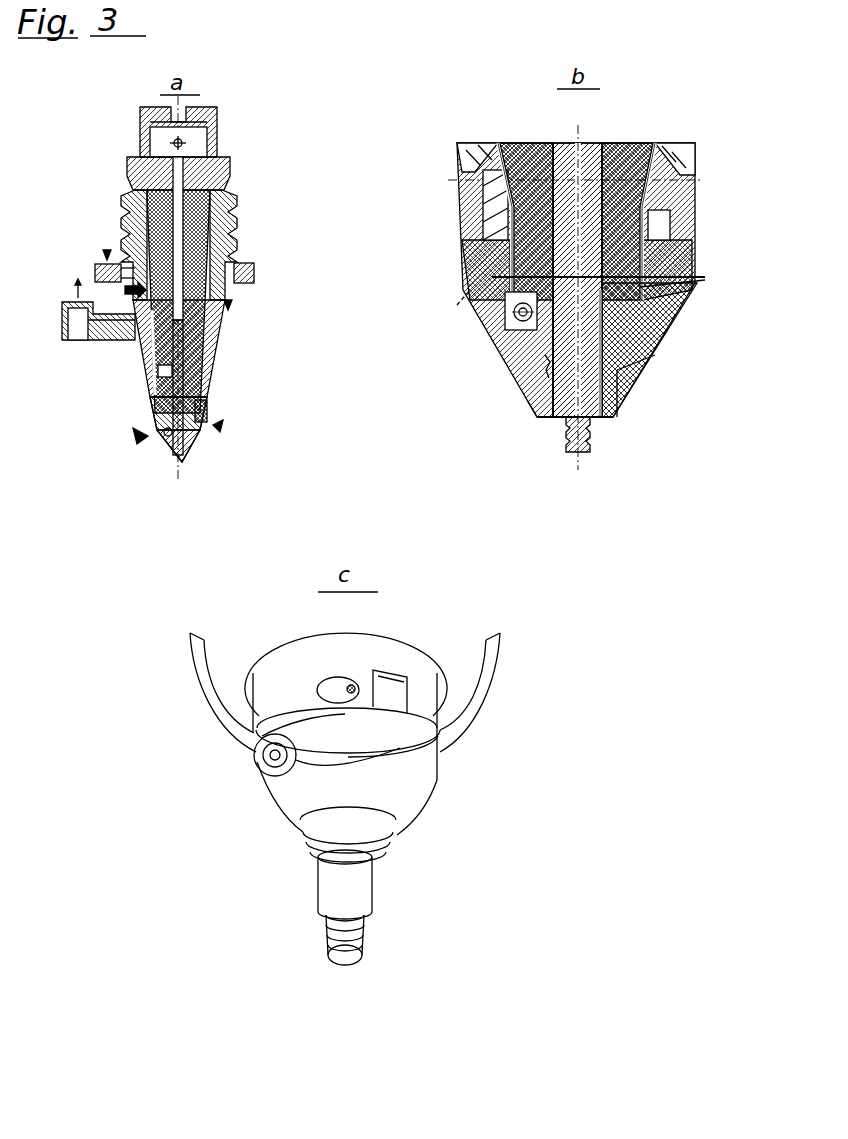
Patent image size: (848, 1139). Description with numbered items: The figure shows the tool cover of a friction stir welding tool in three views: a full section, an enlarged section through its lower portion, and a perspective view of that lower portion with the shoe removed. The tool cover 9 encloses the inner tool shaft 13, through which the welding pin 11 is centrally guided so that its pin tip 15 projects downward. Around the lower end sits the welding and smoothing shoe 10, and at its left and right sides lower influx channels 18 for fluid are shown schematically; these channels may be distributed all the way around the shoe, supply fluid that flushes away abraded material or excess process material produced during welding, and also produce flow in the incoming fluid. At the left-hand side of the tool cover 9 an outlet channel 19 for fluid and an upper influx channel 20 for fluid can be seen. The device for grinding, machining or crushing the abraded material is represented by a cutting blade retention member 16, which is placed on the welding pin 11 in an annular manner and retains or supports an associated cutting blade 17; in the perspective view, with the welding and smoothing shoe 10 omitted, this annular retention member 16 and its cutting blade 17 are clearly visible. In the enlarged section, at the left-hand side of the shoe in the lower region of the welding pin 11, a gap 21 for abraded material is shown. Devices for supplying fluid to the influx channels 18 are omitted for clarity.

In FIG. 3a, the tool cover 9 is at (228, 212).
In FIG. 3b, the tool cover 9 is at (674, 160).
In FIG. 3a, the welding and smoothing shoe 10 is at (203, 420).
In FIG. 3b, the welding and smoothing shoe 10 is at (628, 387).
In FIG. 3a, the welding pin 11 is at (182, 366).
In FIG. 3b, the welding pin 11 is at (575, 340).
In FIG. 3c, the welding pin 11 is at (434, 907).
In FIG. 3a, the inner tool shaft 13 is at (205, 186).
In FIG. 3b, the inner tool shaft 13 is at (620, 198).
In FIG. 3a, the pin tip 15 is at (180, 462).
In FIG. 3b, the pin tip 15 is at (582, 433).
In FIG. 3a, the cutting blade retention member 16 is at (172, 436).
In FIG. 3b, the cutting blade retention member 16 is at (620, 325).
In FIG. 3c, the cutting blade retention member 16 is at (403, 803).
In FIG. 3a, the cutting blade 17 is at (171, 435).
In FIG. 3b, the cutting blade 17 is at (523, 318).
In FIG. 3c, the cutting blade 17 is at (283, 752).
In FIG. 3a, the lower influx channels 18 is at (206, 418).
In FIG. 3b, the lower influx channels 18 is at (613, 277).
In FIG. 3a, the outlet channel 19 is at (85, 312).
In FIG. 3a, the upper influx channel 20 is at (107, 268).
In FIG. 3b, the gap 21 is at (547, 365).